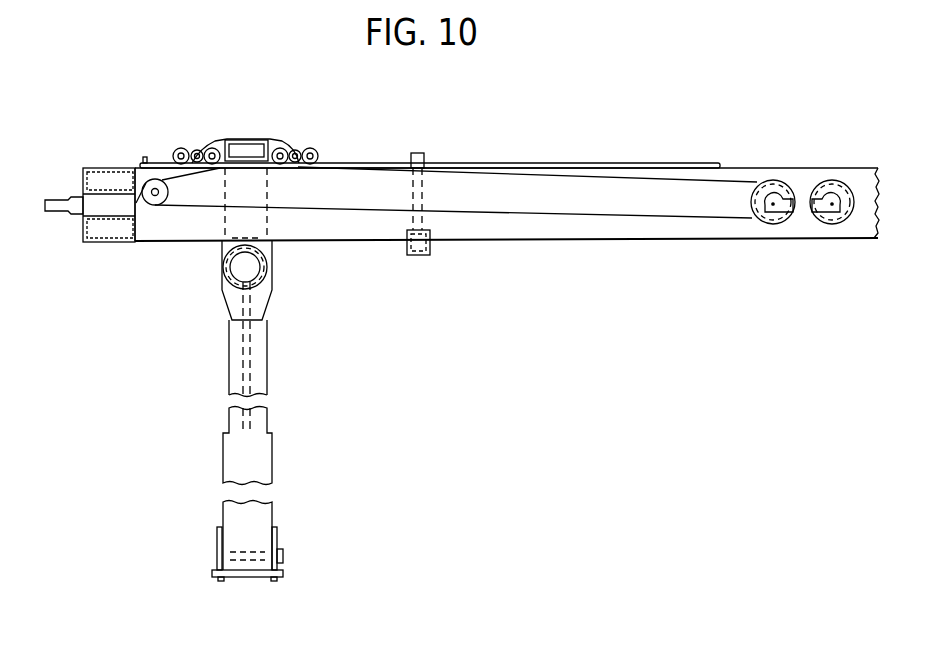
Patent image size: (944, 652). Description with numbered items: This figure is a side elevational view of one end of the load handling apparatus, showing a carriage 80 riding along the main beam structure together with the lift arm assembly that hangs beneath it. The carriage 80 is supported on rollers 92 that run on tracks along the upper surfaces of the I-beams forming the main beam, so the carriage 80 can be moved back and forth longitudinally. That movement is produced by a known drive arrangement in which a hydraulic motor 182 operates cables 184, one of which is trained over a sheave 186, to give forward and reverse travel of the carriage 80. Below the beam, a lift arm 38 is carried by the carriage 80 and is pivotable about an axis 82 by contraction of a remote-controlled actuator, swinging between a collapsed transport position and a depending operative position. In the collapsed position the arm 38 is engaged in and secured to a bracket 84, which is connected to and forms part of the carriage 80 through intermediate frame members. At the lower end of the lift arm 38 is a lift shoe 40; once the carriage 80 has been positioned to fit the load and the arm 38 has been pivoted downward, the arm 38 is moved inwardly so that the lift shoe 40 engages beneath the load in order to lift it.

The lift arm 38 is at (262, 373).
The lift shoe 40 is at (262, 570).
The carriage 80 is at (250, 133).
The axis 82 is at (247, 265).
The bracket 84 is at (430, 255).
The rollers 92 is at (183, 148).
The hydraulic motor 182 is at (823, 194).
The cables 184 is at (512, 173).
The sheave 186 is at (153, 205).